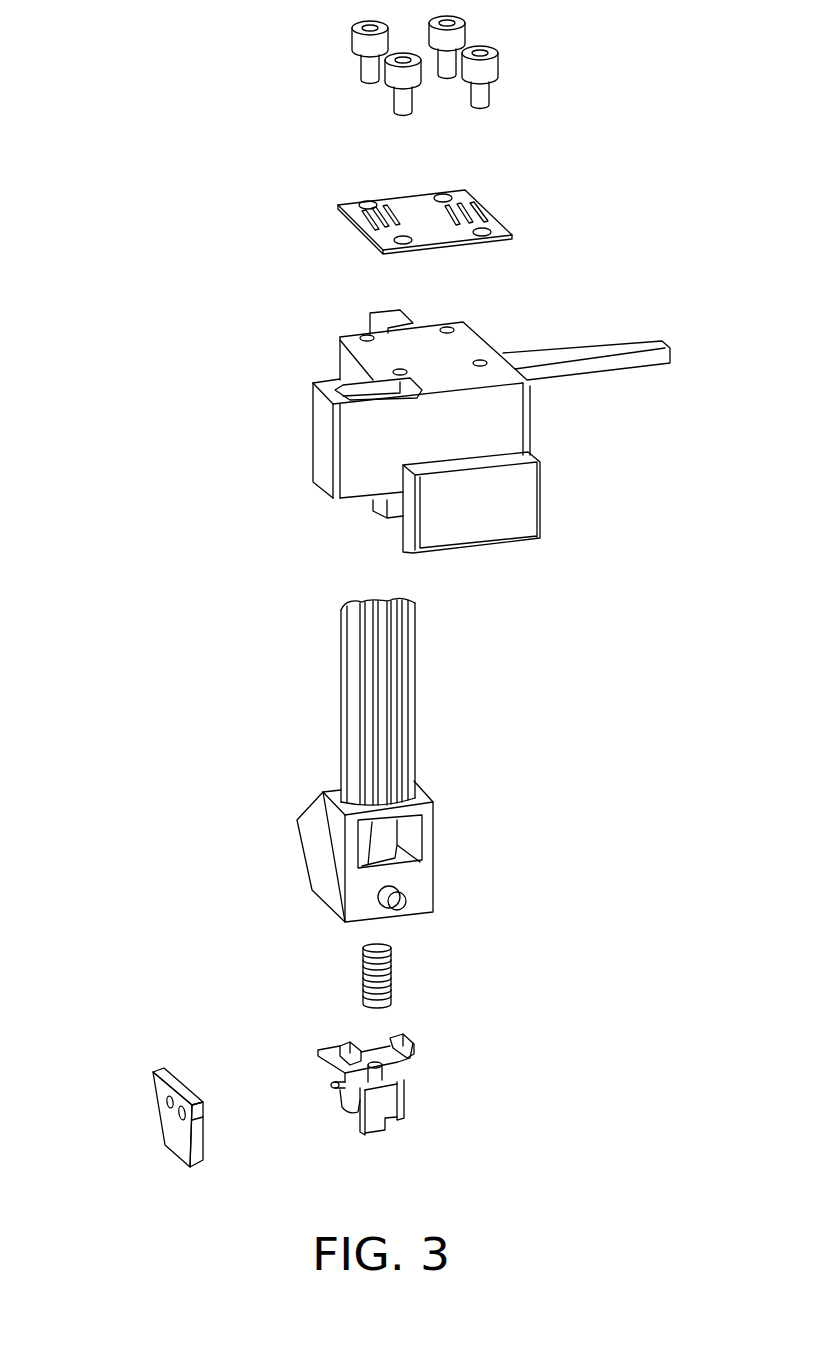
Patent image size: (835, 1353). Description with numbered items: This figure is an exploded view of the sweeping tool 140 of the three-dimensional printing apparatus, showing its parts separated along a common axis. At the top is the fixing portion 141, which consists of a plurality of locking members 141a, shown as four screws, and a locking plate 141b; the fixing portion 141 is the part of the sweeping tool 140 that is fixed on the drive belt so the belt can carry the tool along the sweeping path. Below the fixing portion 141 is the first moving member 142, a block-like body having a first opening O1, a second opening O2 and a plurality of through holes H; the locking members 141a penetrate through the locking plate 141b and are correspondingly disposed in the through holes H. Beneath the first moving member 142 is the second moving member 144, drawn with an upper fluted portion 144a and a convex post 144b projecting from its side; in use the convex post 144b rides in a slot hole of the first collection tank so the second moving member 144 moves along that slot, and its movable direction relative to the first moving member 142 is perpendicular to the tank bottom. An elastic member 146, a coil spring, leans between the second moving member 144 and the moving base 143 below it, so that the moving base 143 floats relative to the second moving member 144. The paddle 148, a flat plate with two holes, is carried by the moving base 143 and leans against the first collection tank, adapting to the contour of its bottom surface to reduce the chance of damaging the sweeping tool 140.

The sweeping tool 140 is at (218, 225).
The fixing portion 141 is at (648, 902).
The locking members 141a is at (487, 72).
The locking plate 141b is at (490, 213).
The first moving member 142 is at (510, 435).
The through holes H is at (369, 337).
The first opening O1 is at (548, 418).
The second opening O2 is at (369, 391).
The moving base 143 is at (382, 1133).
The second moving member 144 is at (322, 830).
The push portion 144a is at (385, 655).
The convex post 144b is at (397, 901).
The elastic member 146 is at (363, 973).
The paddle 148 is at (182, 1140).